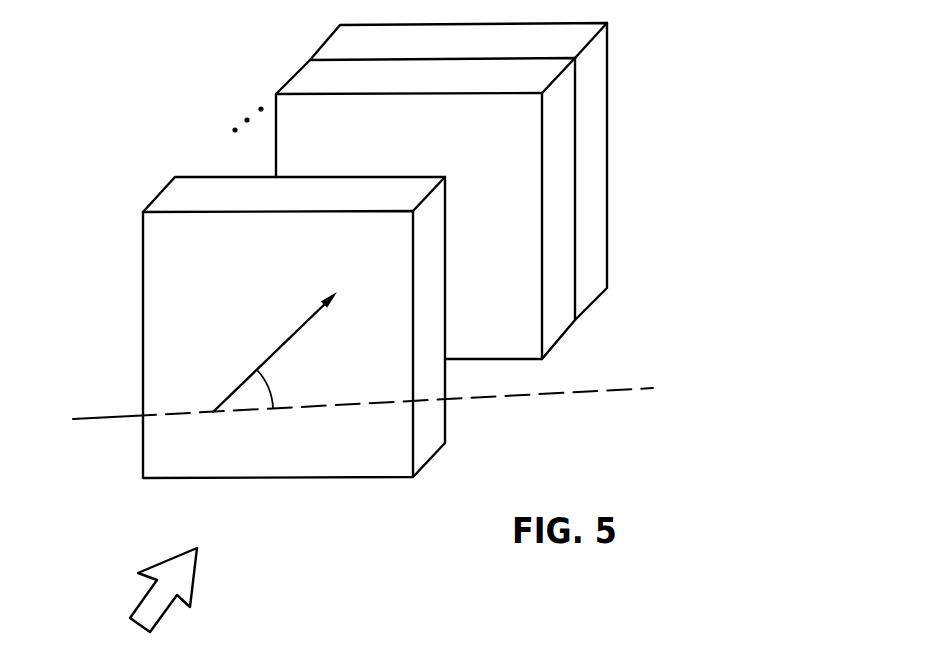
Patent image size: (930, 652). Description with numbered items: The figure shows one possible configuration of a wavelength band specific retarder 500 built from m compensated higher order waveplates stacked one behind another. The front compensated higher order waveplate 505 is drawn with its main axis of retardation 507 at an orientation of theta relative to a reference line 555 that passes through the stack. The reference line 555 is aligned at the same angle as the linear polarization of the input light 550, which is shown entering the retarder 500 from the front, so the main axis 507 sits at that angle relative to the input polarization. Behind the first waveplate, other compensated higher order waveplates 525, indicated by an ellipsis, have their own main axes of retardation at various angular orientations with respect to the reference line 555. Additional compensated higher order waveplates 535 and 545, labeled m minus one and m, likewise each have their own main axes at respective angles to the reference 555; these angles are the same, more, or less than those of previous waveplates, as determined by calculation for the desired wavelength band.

The wavelength band specific retarder 500 is at (262, 514).
The compensated higher order waveplate 505 is at (428, 445).
The main axis of retardation 507 is at (300, 325).
The other compensated higher order waveplates 525 is at (240, 108).
The compensated higher order waveplate 535 is at (552, 322).
The compensated higher order waveplate 545 is at (593, 282).
The input light 550 is at (160, 607).
The reference line 555 is at (95, 416).